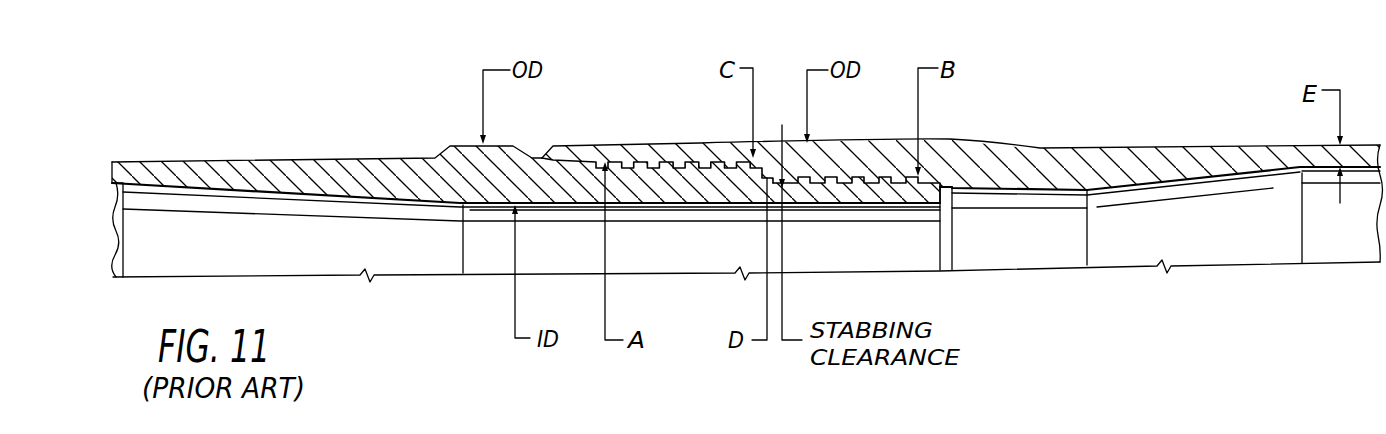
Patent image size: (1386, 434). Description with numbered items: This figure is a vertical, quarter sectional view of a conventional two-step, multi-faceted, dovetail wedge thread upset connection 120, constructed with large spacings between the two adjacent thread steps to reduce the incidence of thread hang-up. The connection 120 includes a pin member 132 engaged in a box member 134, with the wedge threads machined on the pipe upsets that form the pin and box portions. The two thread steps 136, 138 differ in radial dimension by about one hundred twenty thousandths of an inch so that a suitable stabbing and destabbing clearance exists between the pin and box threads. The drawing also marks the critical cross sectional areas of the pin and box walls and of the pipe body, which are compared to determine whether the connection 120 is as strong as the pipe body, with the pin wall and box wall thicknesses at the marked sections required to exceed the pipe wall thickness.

The two-step connection 120 is at (667, 88).
The pin member 132 is at (466, 141).
The box member 134 is at (998, 138).
The first thread step 136 is at (606, 158).
The second thread step 138 is at (903, 176).